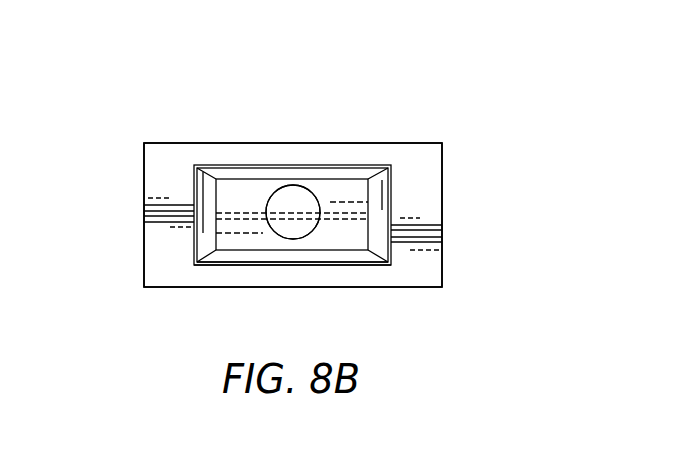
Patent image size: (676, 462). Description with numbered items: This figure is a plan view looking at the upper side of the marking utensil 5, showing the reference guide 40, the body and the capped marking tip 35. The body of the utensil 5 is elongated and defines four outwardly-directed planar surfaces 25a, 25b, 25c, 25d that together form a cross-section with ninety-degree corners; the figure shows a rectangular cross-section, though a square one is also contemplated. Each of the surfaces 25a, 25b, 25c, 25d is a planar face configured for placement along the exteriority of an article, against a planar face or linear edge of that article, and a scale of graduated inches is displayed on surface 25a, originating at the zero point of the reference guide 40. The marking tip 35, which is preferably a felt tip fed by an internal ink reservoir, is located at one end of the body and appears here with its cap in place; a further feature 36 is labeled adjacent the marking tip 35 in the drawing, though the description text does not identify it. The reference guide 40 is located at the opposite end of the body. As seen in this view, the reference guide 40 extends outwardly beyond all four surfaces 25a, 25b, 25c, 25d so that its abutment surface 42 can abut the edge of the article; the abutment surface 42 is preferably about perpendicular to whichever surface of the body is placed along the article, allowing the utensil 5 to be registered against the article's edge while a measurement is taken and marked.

The marking utensil 5 is at (424, 104).
The abutment surface 42 is at (432, 167).
The reference guide 40 is at (458, 252).
The planar surface 25a is at (203, 207).
The planar surface 25b is at (263, 257).
The planar surface 25c is at (320, 172).
The planar surface 25d is at (384, 223).
The marking tip 35 is at (291, 185).
The aperture 36 is at (292, 232).